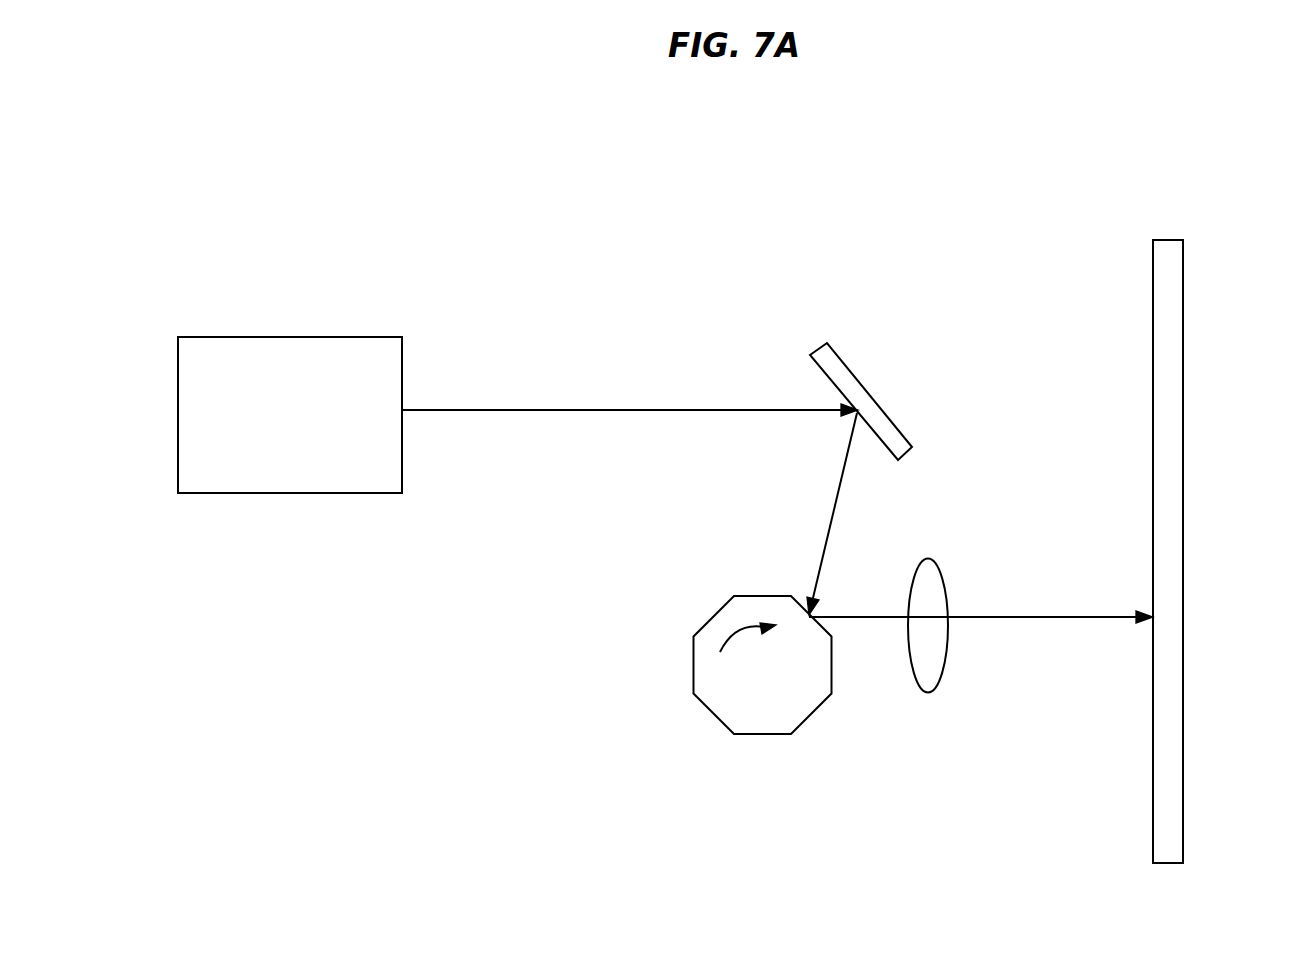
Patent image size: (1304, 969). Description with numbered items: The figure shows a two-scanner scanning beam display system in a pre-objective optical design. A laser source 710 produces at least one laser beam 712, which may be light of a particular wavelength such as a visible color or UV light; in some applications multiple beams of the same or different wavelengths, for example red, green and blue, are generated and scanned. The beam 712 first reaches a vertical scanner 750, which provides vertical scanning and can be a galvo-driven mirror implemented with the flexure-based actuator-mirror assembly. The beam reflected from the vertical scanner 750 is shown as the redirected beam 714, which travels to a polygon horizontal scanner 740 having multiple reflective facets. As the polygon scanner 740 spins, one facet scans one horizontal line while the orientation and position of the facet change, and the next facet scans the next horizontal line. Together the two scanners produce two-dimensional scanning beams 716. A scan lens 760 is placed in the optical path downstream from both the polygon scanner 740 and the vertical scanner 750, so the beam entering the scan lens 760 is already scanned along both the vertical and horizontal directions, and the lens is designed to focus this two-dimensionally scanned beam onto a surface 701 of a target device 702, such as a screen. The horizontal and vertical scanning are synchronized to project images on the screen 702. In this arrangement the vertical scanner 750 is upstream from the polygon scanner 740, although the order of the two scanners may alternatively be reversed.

The laser source 710 is at (290, 415).
The laser beam 712 is at (646, 408).
The vertical scanner 750 is at (830, 362).
The reflected beam 714 is at (832, 500).
The polygon horizontal scanner 740 is at (705, 705).
The 2-D scanning beams 716 is at (889, 618).
The scan lens 760 is at (935, 563).
The target device 702 is at (1170, 265).
The surface 701 is at (1153, 805).